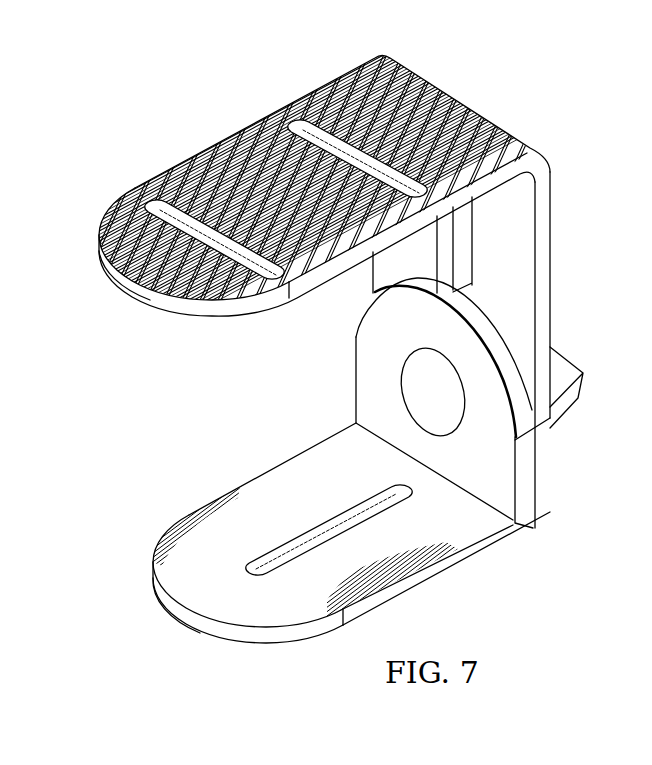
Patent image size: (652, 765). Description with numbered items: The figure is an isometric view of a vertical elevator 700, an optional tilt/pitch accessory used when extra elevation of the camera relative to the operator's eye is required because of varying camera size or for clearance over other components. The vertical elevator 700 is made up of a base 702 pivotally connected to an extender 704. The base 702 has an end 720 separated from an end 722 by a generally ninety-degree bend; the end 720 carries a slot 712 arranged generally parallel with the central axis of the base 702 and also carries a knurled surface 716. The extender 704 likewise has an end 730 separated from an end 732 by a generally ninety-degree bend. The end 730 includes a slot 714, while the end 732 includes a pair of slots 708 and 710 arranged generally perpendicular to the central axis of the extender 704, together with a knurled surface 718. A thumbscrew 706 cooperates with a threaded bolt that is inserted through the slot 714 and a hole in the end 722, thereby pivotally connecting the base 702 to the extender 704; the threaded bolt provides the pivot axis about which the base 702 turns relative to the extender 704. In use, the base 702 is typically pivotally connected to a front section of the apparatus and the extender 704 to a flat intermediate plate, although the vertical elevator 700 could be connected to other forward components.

The vertical elevator 700 is at (126, 405).
The base 702 is at (443, 580).
The extender 704 is at (470, 98).
The thumbscrew 706 is at (584, 387).
The slot 708 is at (163, 190).
The slot 710 is at (303, 118).
The slot 712 is at (340, 533).
The slot 714 is at (453, 250).
The knurled surface 716 is at (263, 648).
The knurled surface 718 is at (235, 145).
The end 720 is at (155, 566).
The end 722 is at (535, 493).
The end 730 is at (551, 300).
The end 732 is at (99, 244).